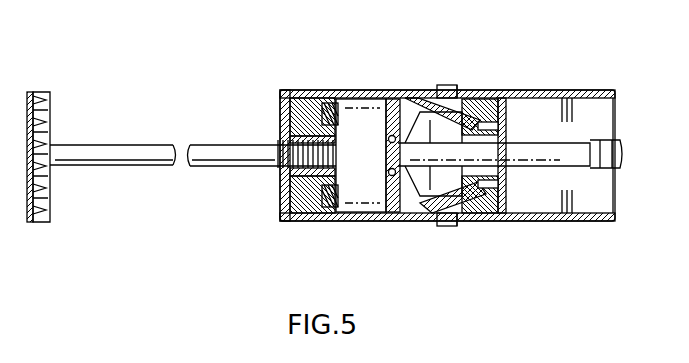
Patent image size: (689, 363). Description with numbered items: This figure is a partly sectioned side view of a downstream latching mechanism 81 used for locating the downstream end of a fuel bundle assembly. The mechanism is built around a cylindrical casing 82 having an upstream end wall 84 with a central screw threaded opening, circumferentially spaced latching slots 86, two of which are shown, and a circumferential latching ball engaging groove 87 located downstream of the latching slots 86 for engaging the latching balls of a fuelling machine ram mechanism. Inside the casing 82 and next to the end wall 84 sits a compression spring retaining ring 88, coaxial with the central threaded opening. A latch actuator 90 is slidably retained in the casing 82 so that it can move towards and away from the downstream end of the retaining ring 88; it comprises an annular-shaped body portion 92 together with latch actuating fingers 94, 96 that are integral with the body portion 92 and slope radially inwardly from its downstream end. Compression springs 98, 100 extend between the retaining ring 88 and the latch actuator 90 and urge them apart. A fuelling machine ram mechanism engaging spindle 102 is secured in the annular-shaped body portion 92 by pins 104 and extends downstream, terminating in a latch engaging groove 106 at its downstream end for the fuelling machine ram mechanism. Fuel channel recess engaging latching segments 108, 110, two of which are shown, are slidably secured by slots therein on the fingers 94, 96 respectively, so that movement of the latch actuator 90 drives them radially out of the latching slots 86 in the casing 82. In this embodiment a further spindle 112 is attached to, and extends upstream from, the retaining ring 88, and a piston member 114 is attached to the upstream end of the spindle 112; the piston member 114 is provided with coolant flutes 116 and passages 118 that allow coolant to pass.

The piston member 114 is at (50, 110).
The passages 118 is at (52, 134).
The coolant flutes 116 is at (45, 152).
The spindle 112 is at (240, 155).
The pins 104 is at (364, 214).
The cylindrical casing 82 is at (355, 92).
The upstream end wall 84 is at (280, 110).
The compression spring retaining ring 88 is at (305, 98).
The spring 100 is at (336, 210).
The downstream latching mechanism 81 is at (334, 96).
The spring 98 is at (395, 98).
The annular-shaped body portion 92 is at (394, 200).
The latch actuator 90 is at (440, 85).
The latching slots 86 is at (452, 86).
The latching segment 110 is at (448, 212).
The latch actuating finger 96 is at (486, 213).
The latch actuating finger 94 is at (603, 76).
The latching ball engaging groove 87 is at (609, 114).
The latching segment 108 is at (552, 72).
The fuelling machine ram mechanism engaging spindle 102 is at (550, 166).
The latch engaging groove 106 is at (598, 166).